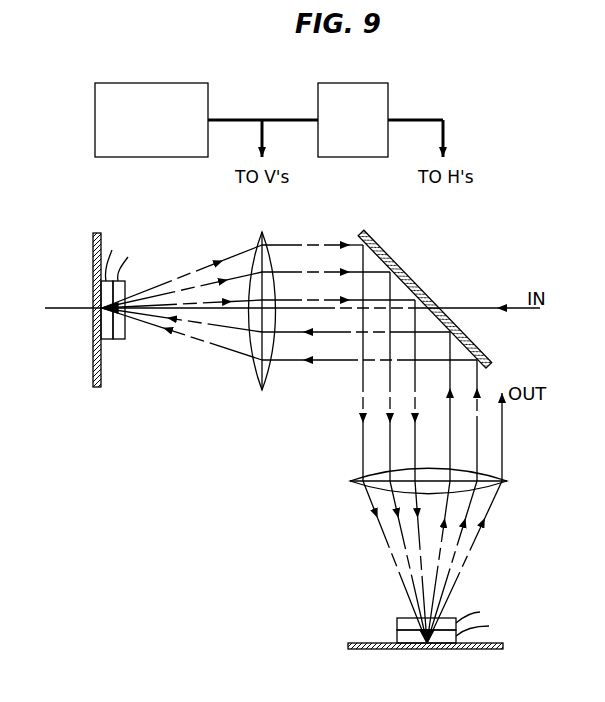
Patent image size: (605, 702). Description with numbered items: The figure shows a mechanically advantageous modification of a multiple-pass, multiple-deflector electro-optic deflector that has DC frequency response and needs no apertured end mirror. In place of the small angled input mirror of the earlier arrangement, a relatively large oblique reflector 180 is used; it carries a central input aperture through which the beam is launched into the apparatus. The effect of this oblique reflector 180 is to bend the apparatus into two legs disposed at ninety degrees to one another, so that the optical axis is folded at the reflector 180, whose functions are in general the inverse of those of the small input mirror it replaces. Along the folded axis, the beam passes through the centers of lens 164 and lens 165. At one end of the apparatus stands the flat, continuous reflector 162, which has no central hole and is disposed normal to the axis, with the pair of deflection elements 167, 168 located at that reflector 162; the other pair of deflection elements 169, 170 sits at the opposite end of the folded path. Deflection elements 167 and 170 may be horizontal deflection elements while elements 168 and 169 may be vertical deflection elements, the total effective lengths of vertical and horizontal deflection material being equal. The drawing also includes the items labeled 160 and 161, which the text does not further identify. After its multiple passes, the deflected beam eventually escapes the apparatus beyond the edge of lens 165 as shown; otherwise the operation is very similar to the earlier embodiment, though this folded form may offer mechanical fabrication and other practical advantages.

The synchronous modulator 160 is at (95, 112).
The 90 degree phase shifter 161 is at (390, 97).
The reflector 162 is at (99, 233).
The lens 164 is at (257, 380).
The lens 165 is at (351, 481).
The deflection element 167 is at (106, 339).
The deflection element 168 is at (118, 339).
The deflection element 169 is at (397, 622).
The deflection element 170 is at (397, 635).
The oblique reflector 180 is at (386, 256).